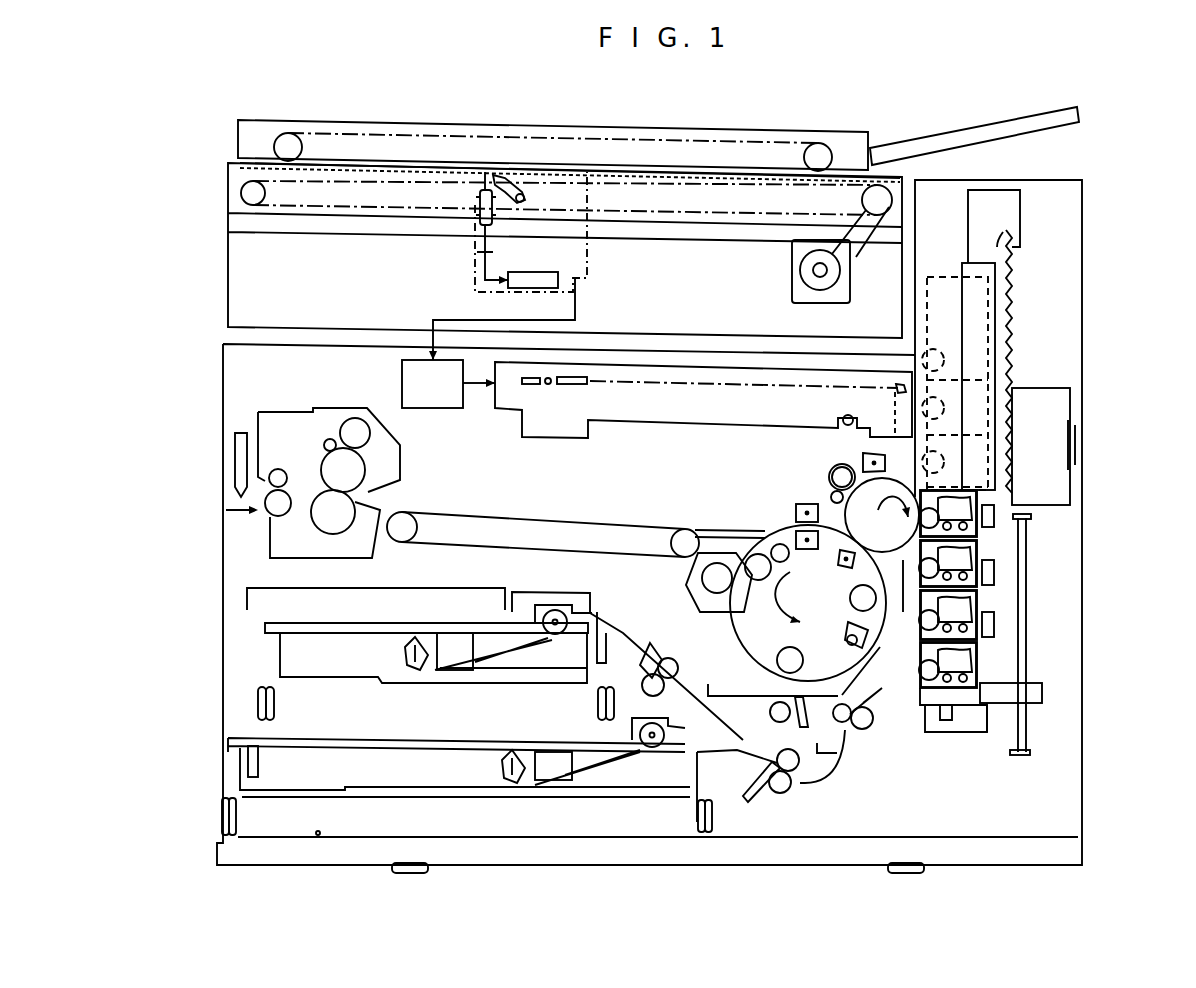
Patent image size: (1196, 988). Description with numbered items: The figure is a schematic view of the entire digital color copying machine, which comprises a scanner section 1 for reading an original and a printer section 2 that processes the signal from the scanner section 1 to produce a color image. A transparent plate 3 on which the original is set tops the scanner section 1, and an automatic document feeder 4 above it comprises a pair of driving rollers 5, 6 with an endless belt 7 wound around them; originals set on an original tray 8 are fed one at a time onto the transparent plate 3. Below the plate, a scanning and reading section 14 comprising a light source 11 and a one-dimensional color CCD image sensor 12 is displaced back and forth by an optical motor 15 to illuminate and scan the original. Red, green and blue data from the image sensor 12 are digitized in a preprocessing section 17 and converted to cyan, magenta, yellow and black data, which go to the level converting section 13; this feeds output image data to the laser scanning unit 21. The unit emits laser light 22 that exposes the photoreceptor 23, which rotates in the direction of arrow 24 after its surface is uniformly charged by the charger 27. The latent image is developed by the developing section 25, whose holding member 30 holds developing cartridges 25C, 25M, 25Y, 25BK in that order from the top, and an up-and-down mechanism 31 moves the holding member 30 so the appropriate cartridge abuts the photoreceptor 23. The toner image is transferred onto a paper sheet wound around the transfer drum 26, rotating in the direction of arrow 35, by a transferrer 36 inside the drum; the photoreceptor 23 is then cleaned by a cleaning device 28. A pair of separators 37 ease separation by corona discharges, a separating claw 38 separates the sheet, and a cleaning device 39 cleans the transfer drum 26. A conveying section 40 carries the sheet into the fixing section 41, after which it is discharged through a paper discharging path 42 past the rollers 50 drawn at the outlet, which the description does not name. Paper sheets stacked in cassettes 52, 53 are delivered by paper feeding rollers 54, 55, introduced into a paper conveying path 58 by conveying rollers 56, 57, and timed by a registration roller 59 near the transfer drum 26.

The scanner section 1 is at (897, 172).
The printer section 2 is at (1086, 215).
The transparent plate 3 is at (670, 170).
The automatic document feeder 4 is at (742, 130).
The driving roller 5 is at (287, 140).
The driving roller 6 is at (822, 148).
The endless belt 7 is at (505, 133).
The original tray 8 is at (1058, 117).
The light source 11 is at (520, 203).
The one-dimensional color CCD image sensor 12 is at (473, 268).
The input-output level converting section 13 is at (430, 400).
The scanning and reading section 14 is at (587, 278).
The optical motor 15 is at (812, 282).
The preprocessing section 17 is at (560, 272).
The laser scanning unit 21 is at (625, 440).
The laser light 22 is at (728, 388).
The photoreceptor 23 is at (902, 601).
The arrow 24 is at (882, 515).
The developing section 25 is at (945, 742).
The developing cartridge 25C is at (977, 517).
The developing cartridge 25M is at (977, 572).
The developing cartridge 25Y is at (977, 620).
The developing cartridge 25BK is at (977, 670).
The transfer drum 26 is at (753, 627).
The charger 27 is at (862, 453).
The cleaning device 28 is at (828, 473).
The holding member 30 is at (965, 700).
The up-and-down mechanism 31 is at (1032, 527).
The arrow 35 is at (832, 635).
The transferrer 36 is at (843, 600).
The separators 37 is at (782, 530).
The separating claw 38 is at (727, 532).
The cleaning device 39 is at (690, 594).
The conveying section 40 is at (553, 522).
The fixing section 41 is at (345, 410).
The paper discharging path 42 is at (228, 512).
The discharge rollers 50 is at (258, 512).
The cassette 52 is at (355, 670).
The cassette 53 is at (413, 780).
The paper feeding roller 54 is at (558, 608).
The paper feeding roller 55 is at (628, 731).
The conveying roller 56 is at (666, 675).
The conveying roller 57 is at (778, 790).
The paper conveying path 58 is at (842, 760).
The registration roller 59 is at (865, 708).